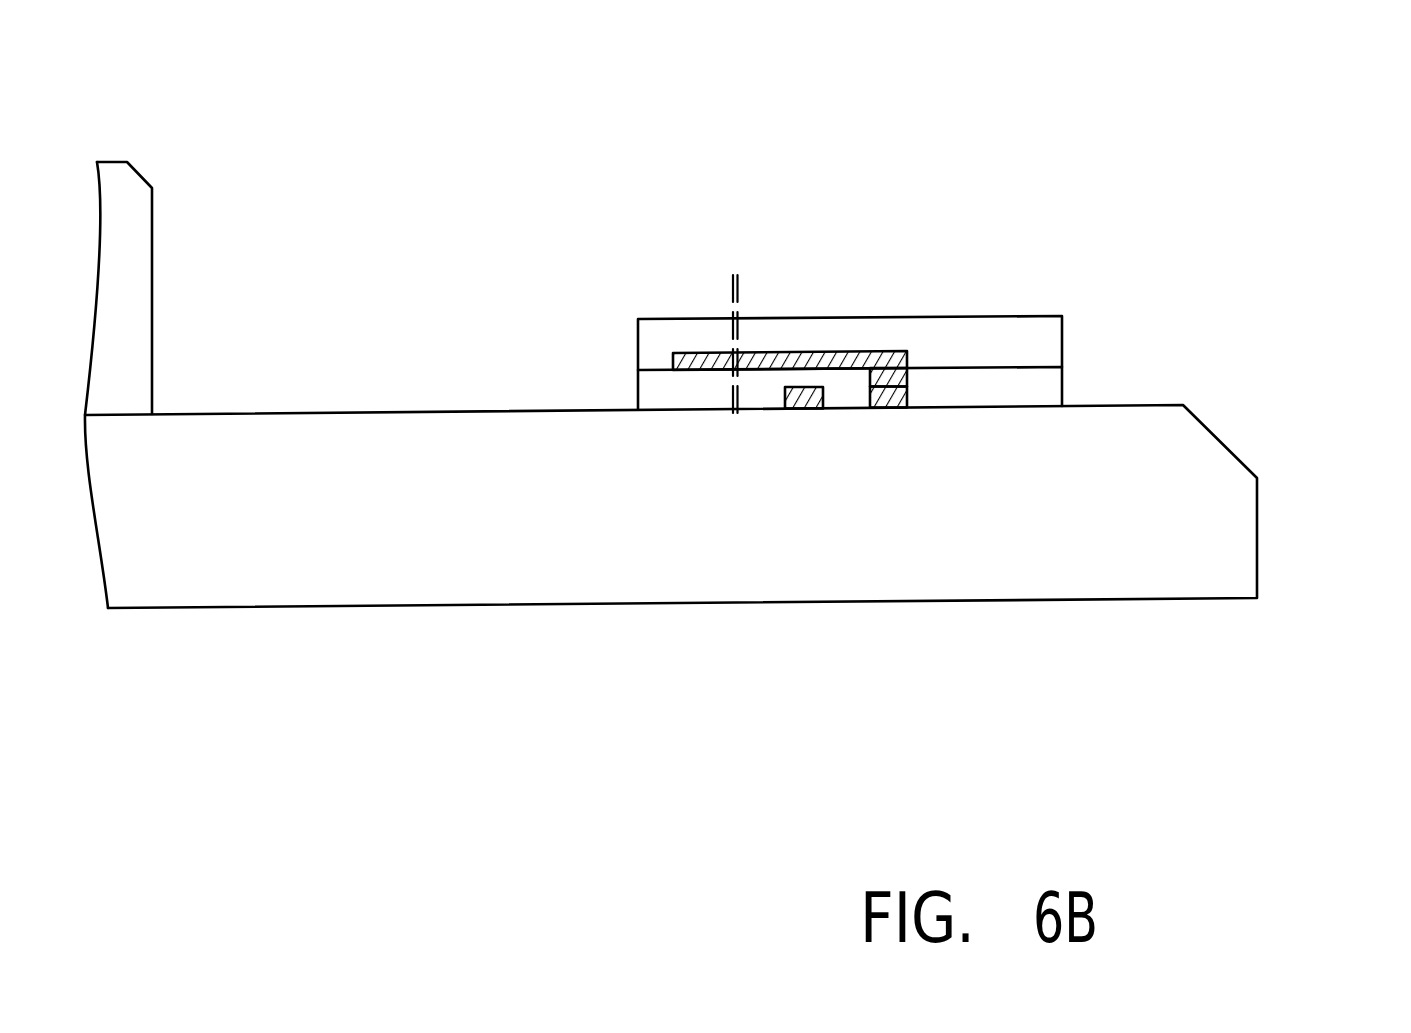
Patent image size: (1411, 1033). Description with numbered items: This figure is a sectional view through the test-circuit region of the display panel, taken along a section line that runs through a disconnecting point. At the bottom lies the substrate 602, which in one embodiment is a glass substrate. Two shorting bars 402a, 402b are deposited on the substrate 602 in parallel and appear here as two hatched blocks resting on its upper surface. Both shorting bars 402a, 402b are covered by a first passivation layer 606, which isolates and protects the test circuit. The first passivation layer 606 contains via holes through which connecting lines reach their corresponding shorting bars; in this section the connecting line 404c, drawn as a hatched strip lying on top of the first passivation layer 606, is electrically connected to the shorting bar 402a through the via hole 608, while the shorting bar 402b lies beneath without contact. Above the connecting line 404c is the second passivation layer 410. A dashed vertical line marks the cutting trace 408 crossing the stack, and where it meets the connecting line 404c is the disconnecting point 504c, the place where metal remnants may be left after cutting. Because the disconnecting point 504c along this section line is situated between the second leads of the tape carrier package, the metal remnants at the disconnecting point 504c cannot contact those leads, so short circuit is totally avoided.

The cutting trace 408 is at (738, 287).
The disconnecting point 504c is at (723, 352).
The via hole 608 is at (927, 385).
The second passivation layer 410 is at (1050, 340).
The first passivation layer 606 is at (1055, 388).
The substrate 602 is at (1243, 582).
The connecting line 404c is at (688, 365).
The shorting bar 402b is at (790, 408).
The shorting bar 402a is at (887, 408).